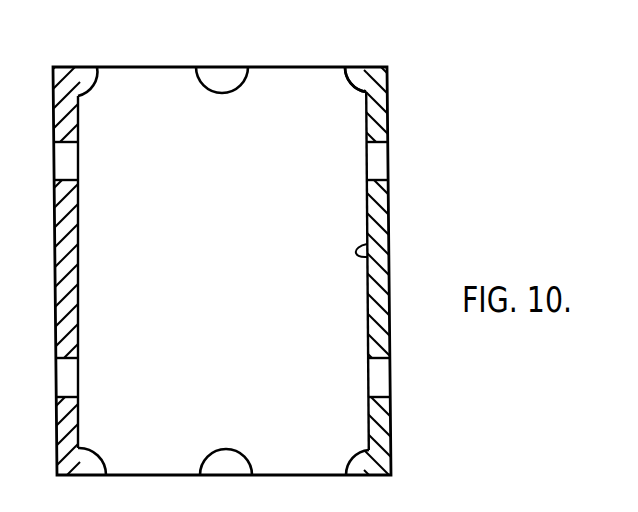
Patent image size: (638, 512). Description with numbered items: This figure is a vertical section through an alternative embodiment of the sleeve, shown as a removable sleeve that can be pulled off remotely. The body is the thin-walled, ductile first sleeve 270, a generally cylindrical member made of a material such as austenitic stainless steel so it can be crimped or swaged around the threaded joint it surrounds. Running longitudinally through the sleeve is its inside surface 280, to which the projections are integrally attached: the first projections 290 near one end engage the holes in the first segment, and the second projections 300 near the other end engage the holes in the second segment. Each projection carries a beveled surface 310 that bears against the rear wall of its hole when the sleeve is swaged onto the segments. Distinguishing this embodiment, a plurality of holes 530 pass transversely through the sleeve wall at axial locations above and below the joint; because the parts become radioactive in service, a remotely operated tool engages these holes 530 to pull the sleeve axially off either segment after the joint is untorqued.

The first sleeve 270 is at (378, 213).
The inside surface 280 is at (368, 250).
The first projections 290 is at (362, 451).
The second projections 300 is at (358, 92).
The beveled surface 310 is at (343, 72).
The holes 530 is at (389, 155).